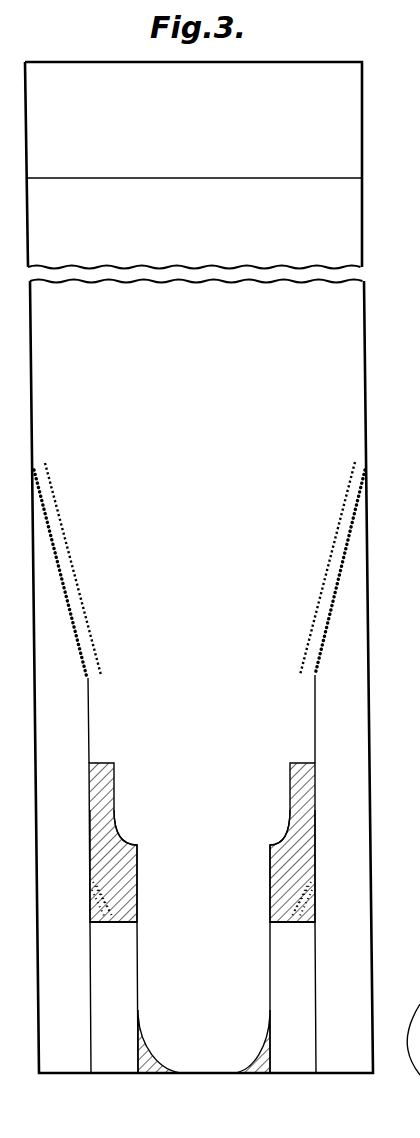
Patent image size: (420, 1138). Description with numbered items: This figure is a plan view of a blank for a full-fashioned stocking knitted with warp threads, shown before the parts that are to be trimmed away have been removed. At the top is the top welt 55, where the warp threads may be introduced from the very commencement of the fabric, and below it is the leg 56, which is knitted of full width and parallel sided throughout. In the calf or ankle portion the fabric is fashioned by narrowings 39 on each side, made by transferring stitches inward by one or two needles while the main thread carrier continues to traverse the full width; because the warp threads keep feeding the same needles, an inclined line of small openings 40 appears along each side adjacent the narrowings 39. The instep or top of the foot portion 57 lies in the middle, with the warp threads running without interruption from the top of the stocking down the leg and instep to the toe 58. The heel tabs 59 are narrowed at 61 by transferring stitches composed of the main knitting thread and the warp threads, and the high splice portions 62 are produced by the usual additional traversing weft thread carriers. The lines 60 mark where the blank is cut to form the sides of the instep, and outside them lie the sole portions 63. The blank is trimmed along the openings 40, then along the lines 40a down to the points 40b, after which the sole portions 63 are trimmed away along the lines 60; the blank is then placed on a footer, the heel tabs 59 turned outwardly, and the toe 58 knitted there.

The top welt 55 is at (348, 131).
The leg 56 is at (353, 367).
The narrowings 39 is at (80, 579).
The openings 40 is at (74, 630).
The lines 40a is at (89, 727).
The points 40b is at (333, 932).
The high splice portions 62 is at (100, 795).
The heel tabs 59 is at (100, 860).
The heel narrowings 61 is at (92, 899).
The instep 57 is at (204, 981).
The cutting lines 60 is at (139, 945).
The sole portions 63 is at (107, 989).
The toe 58 is at (419, 998).